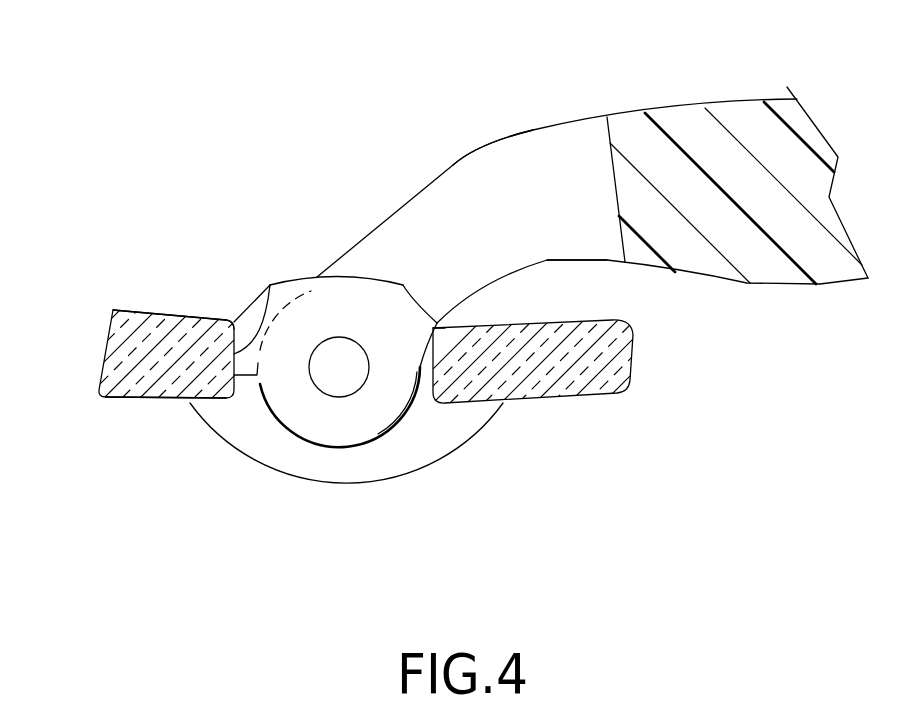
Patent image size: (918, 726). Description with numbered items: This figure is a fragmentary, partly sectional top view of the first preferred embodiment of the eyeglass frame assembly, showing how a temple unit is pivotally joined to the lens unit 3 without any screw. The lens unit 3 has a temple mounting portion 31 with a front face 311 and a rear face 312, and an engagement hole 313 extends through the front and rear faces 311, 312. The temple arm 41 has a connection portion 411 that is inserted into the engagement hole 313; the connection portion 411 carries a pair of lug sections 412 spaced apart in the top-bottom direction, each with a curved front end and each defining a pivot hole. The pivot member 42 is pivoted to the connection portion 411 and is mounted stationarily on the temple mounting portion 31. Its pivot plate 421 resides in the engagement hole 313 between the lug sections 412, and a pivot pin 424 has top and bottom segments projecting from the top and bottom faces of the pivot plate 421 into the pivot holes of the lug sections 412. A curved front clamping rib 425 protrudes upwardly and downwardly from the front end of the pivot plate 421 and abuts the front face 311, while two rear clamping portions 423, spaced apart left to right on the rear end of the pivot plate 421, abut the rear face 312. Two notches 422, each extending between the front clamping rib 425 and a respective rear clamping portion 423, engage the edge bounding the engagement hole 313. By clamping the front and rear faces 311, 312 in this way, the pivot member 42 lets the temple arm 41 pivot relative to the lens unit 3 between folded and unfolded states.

The lens unit 3 is at (102, 325).
The temple mounting portion 31 is at (125, 368).
The front face 311 is at (133, 398).
The rear face 312 is at (150, 312).
The engagement hole 313 is at (234, 365).
The temple arm 41 is at (740, 103).
The connection portion 411 is at (628, 198).
The lug section 412 is at (370, 267).
The pivot member 42 is at (432, 473).
The pivot plate 421 is at (335, 312).
The notch 422 is at (268, 290).
The rear clamping portion 423 is at (234, 323).
The pivot pin 424 is at (327, 378).
The front clamping rib 425 is at (232, 440).